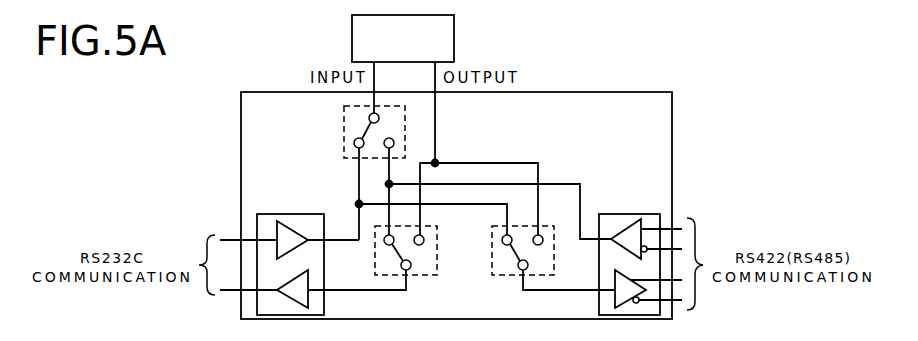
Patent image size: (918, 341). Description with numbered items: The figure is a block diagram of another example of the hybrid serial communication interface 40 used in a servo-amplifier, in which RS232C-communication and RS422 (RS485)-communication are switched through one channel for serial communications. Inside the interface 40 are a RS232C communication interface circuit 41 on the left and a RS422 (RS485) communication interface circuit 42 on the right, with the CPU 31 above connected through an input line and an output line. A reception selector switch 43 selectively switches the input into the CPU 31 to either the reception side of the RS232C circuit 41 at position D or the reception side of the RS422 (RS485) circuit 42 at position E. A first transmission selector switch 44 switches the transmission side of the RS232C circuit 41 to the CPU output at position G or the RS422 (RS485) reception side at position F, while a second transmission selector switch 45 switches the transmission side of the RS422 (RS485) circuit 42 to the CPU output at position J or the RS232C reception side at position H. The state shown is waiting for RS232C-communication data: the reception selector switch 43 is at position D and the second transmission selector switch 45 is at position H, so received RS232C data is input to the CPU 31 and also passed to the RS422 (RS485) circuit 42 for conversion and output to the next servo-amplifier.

The CPU 31 is at (457, 39).
The hybrid serial communication interface 40 is at (675, 107).
The RS232C communication interface circuit 41 is at (302, 214).
The RS422 (RS485) communication interface circuit 42 is at (634, 214).
The reception selector switch 43 is at (345, 121).
The first transmission selector switch 44 is at (375, 253).
The second transmission selector switch 45 is at (494, 253).